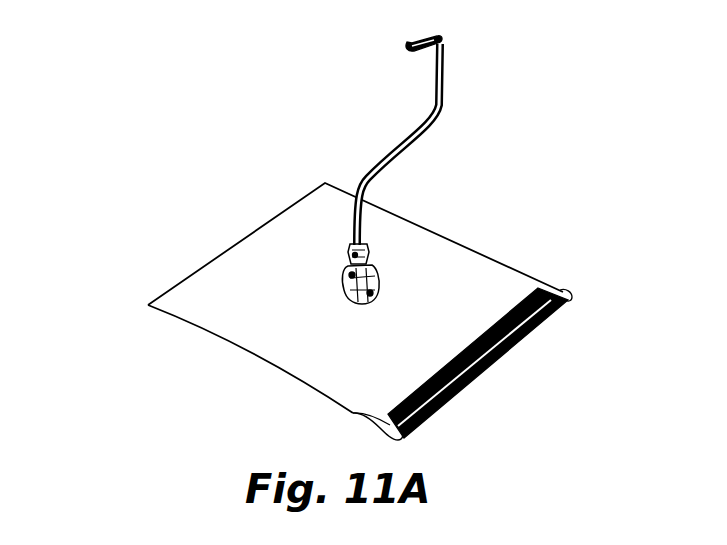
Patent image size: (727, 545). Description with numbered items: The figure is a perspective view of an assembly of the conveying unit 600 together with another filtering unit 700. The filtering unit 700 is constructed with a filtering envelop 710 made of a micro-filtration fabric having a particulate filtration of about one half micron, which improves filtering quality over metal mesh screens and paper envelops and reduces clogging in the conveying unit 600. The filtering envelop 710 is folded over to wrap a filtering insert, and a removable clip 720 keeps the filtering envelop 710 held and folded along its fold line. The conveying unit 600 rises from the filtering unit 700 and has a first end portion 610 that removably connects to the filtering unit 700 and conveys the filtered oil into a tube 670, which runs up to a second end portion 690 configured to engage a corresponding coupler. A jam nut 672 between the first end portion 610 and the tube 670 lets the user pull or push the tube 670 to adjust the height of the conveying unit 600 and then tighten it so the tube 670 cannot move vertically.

The conveying unit 600 is at (377, 157).
The first end portion 610 is at (378, 283).
The tube 670 is at (440, 107).
The jam nut 672 is at (367, 255).
The second end portion 690 is at (404, 48).
The filtering unit 700 is at (160, 292).
The filtering envelop 710 is at (258, 250).
The removable clip 720 is at (470, 372).